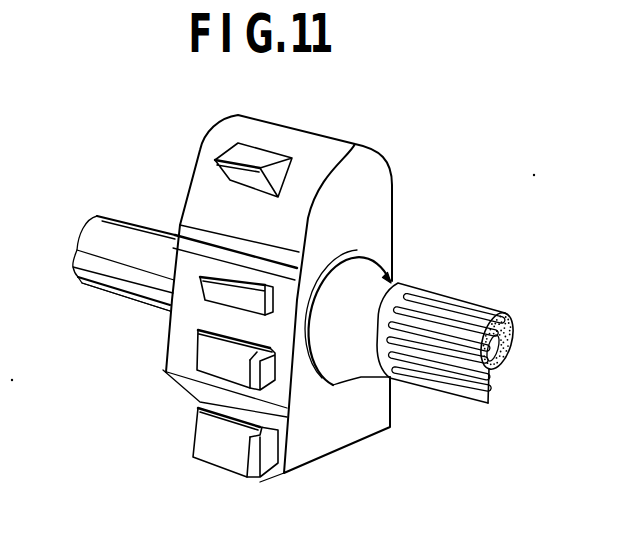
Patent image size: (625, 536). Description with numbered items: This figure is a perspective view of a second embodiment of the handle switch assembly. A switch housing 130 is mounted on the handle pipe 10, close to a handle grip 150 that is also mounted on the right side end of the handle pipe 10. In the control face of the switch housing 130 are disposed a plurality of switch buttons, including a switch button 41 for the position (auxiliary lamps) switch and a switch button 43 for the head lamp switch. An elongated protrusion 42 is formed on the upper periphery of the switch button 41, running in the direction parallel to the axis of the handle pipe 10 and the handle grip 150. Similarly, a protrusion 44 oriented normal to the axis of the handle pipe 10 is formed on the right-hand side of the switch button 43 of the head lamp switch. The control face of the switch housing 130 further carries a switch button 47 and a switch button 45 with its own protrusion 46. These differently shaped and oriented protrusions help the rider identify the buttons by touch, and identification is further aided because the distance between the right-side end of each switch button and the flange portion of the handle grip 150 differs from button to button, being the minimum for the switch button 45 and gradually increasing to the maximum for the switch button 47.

The handle pipe 10 is at (112, 231).
The switch button 41 is at (255, 309).
The elongated protrusion 42 is at (201, 277).
The switch button 43 is at (205, 353).
The protrusion 44 is at (262, 376).
The switch button 45 is at (222, 448).
The protrusion 46 is at (248, 478).
The switch button 47 is at (238, 150).
The switch housing 130 is at (382, 187).
The handle grip 150 is at (387, 297).